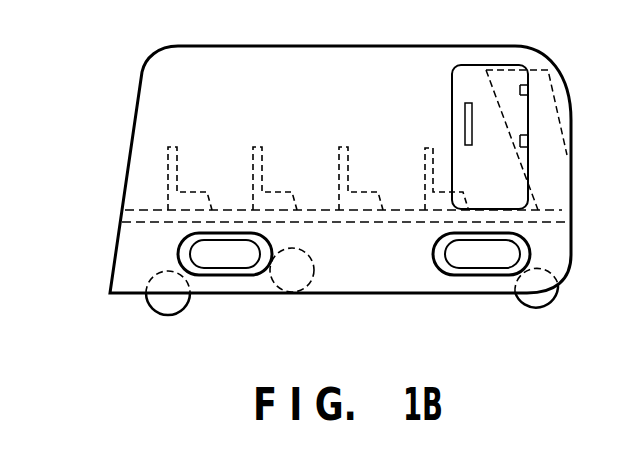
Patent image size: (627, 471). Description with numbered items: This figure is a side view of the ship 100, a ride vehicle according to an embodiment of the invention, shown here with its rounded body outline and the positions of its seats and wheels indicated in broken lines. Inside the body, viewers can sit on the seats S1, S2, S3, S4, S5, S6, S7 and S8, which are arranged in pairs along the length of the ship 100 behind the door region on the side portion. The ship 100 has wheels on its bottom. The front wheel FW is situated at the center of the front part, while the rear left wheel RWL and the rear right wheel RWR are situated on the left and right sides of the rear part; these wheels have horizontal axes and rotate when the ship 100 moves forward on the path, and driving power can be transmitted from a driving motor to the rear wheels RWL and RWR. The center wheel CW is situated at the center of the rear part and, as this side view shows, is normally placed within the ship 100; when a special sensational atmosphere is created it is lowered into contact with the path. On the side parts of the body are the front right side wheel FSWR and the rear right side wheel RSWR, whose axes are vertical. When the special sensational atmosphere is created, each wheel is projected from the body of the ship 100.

The ship 100 is at (556, 63).
The seat S1 is at (438, 145).
The seat S2 is at (425, 175).
The seat S3 is at (361, 145).
The seat S4 is at (367, 192).
The seat S5 is at (275, 144).
The seat S6 is at (281, 192).
The seat S7 is at (190, 144).
The seat S8 is at (196, 192).
The rear right wheel RWR is at (134, 314).
The rear left wheel RWL is at (152, 303).
The rear right side wheel RSWR is at (237, 263).
The center wheel CW is at (305, 282).
The front right side wheel FSWR is at (457, 262).
The front wheel FW is at (543, 311).